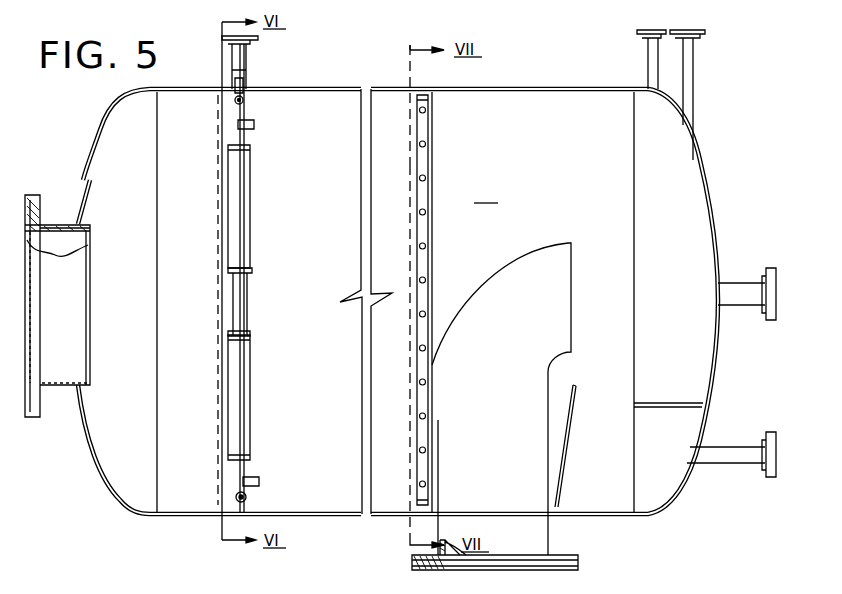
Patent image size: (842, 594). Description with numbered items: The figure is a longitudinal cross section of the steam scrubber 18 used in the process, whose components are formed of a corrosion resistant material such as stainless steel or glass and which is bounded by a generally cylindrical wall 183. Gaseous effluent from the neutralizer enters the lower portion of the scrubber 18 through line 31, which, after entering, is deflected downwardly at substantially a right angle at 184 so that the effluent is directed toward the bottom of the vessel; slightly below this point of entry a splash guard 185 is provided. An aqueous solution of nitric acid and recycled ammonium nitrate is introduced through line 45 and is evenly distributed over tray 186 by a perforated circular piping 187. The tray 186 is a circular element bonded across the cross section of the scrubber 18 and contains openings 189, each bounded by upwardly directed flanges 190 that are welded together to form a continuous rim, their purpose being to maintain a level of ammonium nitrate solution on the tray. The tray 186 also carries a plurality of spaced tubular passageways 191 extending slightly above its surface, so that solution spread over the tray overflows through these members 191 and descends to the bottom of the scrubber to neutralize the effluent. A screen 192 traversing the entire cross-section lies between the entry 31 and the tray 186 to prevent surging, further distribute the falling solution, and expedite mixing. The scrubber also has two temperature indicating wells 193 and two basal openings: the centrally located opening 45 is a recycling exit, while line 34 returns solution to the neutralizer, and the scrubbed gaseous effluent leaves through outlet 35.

The scrubber 18 is at (487, 190).
The line 31 is at (548, 538).
The line 34 is at (718, 450).
The outlet 35 is at (25, 287).
The line 45 is at (240, 63).
The cylindrical wall 183 is at (527, 88).
The downward deflection of line 184 is at (562, 262).
The splash guard 185 is at (567, 430).
The tray 186 is at (252, 306).
The perforated circular piping 187 is at (244, 101).
The openings 189 is at (241, 206).
The upwardly directed flanges 190 is at (250, 270).
The tubular passageways 191 is at (254, 125).
The screen 192 is at (424, 135).
The temperature indicating wells 193 is at (652, 70).